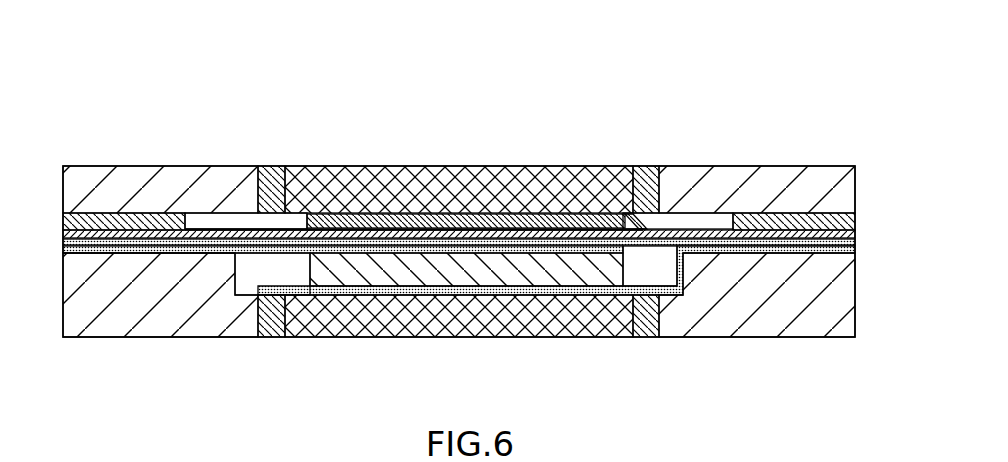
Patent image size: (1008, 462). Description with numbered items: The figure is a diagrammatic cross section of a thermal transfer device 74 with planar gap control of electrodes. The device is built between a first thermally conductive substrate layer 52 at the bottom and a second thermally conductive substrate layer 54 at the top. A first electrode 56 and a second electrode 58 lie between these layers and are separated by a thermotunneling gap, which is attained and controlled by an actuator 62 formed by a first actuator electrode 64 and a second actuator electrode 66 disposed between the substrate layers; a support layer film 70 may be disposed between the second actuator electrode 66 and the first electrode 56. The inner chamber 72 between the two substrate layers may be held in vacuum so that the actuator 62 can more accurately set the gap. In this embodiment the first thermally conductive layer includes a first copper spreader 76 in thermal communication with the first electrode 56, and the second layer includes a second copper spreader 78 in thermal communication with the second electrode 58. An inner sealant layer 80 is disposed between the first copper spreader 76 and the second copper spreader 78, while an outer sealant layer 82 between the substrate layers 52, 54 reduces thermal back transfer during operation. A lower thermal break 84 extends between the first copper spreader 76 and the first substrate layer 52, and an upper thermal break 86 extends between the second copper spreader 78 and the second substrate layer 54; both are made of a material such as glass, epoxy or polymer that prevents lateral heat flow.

The first thermally conductive substrate layer 52 is at (152, 337).
The second thermally conductive substrate layer 54 is at (136, 166).
The first electrode 56 is at (62, 233).
The second electrode 58 is at (857, 233).
The actuator 62 is at (542, 278).
The first actuator electrode 64 is at (857, 248).
The second actuator electrode 66 is at (63, 253).
The support layer film 70 is at (63, 241).
The inner chamber 72 is at (666, 272).
The thermal transfer device 74 is at (760, 76).
The first copper spreader 76 is at (425, 337).
The second copper spreader 78 is at (420, 166).
The inner sealant layer 80 is at (645, 216).
The outer sealant layer 82 is at (196, 222).
The lower thermal break 84 is at (266, 338).
The upper thermal break 86 is at (272, 172).